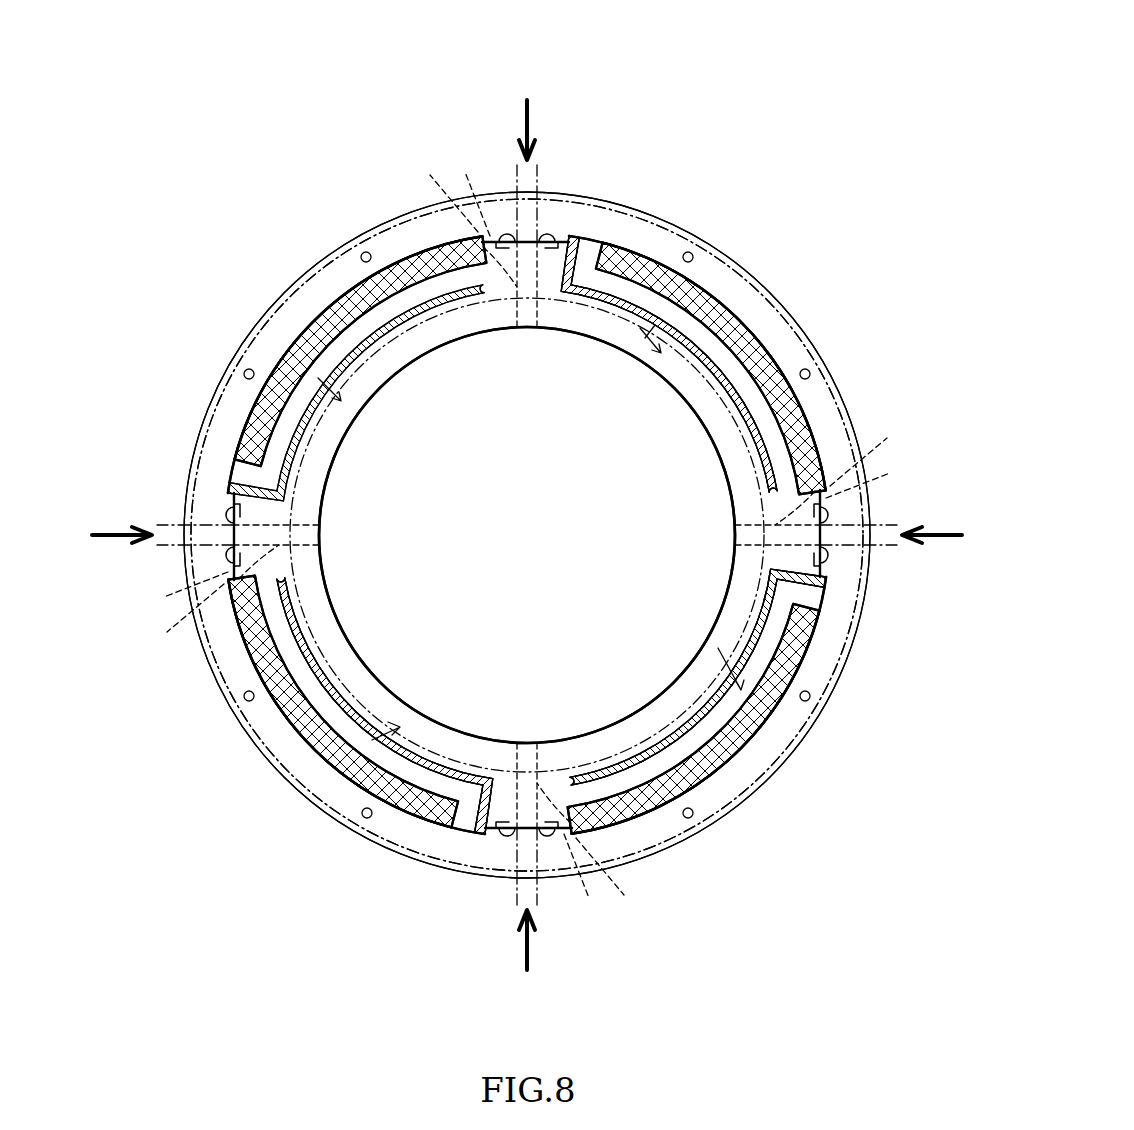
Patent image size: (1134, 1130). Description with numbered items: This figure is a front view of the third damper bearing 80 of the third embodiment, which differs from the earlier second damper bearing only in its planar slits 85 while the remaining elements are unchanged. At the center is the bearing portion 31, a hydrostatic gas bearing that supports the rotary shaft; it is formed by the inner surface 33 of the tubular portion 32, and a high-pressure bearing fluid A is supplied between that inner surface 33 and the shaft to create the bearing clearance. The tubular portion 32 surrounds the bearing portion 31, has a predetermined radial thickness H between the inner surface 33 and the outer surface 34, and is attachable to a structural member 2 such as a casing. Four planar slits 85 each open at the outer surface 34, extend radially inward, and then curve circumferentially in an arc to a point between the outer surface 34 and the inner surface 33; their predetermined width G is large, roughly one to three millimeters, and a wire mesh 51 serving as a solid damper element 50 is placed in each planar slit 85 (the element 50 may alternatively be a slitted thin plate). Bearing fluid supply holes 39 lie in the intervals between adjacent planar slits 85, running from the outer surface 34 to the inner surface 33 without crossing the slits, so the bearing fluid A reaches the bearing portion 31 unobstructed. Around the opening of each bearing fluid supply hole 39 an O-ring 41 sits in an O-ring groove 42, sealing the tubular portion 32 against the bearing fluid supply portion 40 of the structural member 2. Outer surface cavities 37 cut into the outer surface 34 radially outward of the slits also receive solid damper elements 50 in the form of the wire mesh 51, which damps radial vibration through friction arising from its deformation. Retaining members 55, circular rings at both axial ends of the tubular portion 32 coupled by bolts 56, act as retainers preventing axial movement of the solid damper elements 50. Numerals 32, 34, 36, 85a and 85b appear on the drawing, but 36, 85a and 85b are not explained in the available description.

The structural member 2 is at (392, 76).
The bearing portion 31 is at (696, 420).
The tubular portion 32 is at (826, 600).
The inner surface 33 is at (527, 535).
The outer surface 34 is at (578, 240).
The gap partition member 36 is at (500, 238).
The outer surface cavity 37 is at (793, 352).
The bearing fluid supply hole 39 is at (455, 235).
The bearing fluid supply portion 40 is at (538, 195).
The O-ring 41 is at (550, 232).
The O-ring groove 42 is at (478, 228).
The solid damper element 50 is at (524, 533).
The wire mesh 51 is at (362, 242).
The retaining member 55 is at (300, 800).
The bolt 56 is at (348, 822).
The third damper bearing 80 is at (830, 82).
The planar slit 85 is at (622, 262).
The stator segment core portion 85a is at (608, 248).
The stator segment thin portion 85b is at (402, 282).
The bearing fluid A is at (518, 135).
The predetermined width G is at (531, 535).
The radial thickness H is at (270, 650).